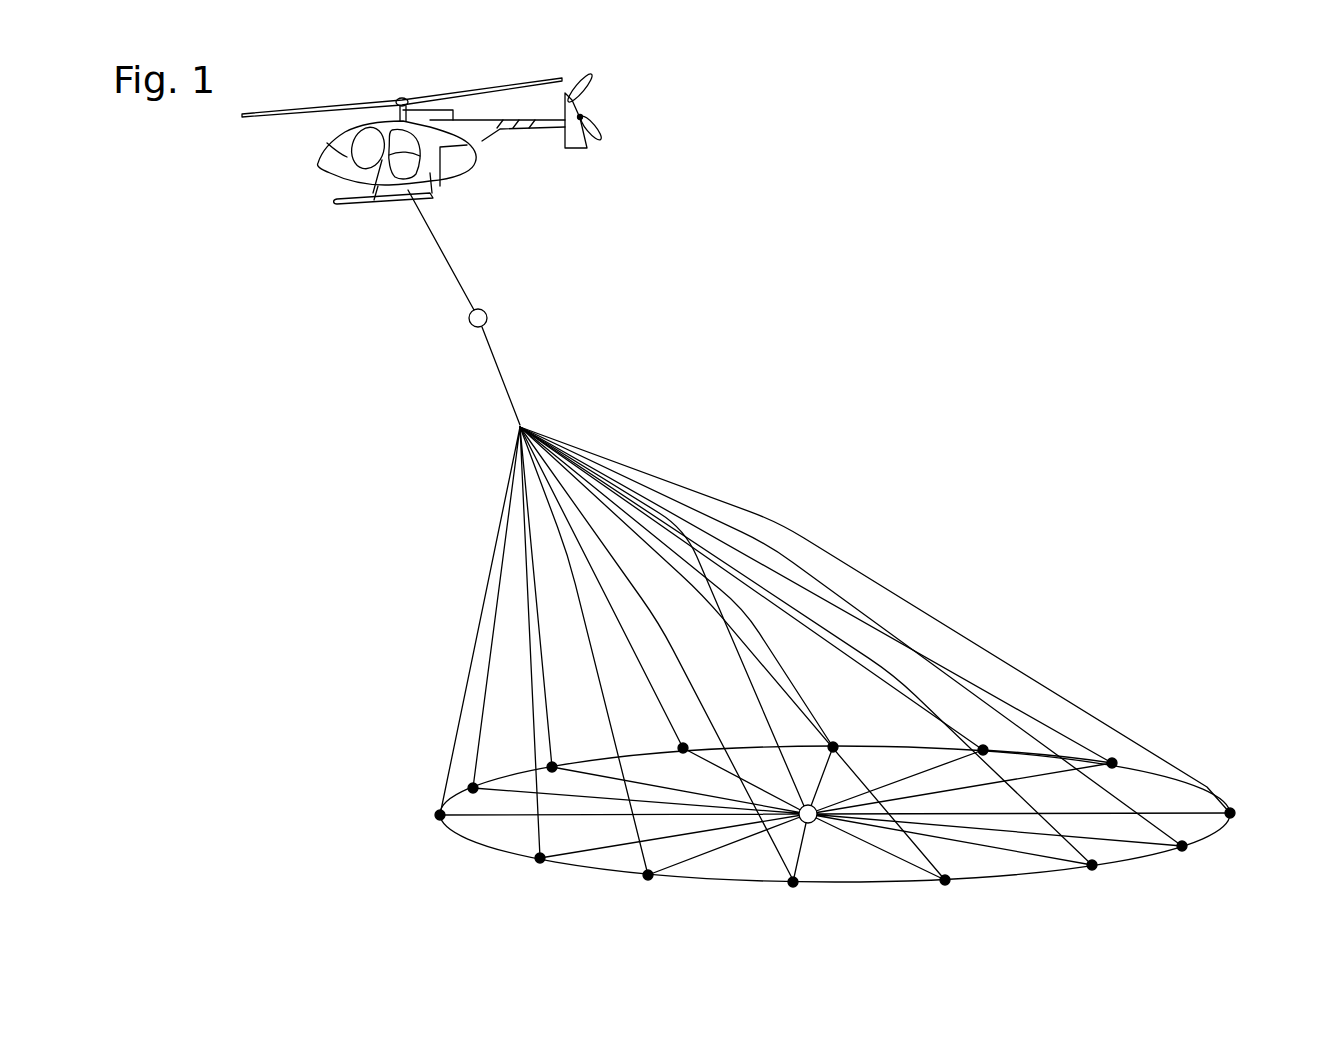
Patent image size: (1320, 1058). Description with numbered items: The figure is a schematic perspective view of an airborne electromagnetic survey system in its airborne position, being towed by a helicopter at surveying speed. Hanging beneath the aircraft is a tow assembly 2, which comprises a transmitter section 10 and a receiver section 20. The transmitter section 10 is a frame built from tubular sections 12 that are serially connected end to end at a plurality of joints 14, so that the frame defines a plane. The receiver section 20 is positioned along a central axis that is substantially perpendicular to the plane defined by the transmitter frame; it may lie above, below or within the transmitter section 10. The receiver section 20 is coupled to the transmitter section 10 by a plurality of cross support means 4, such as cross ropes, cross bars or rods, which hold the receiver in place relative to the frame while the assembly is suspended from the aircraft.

The tow assembly 2 is at (441, 546).
The cross support means 4 is at (476, 810).
The transmitter section 10 is at (1217, 772).
The tubular sections 12 is at (888, 718).
The joints 14 is at (999, 735).
The receiver section 20 is at (512, 316).